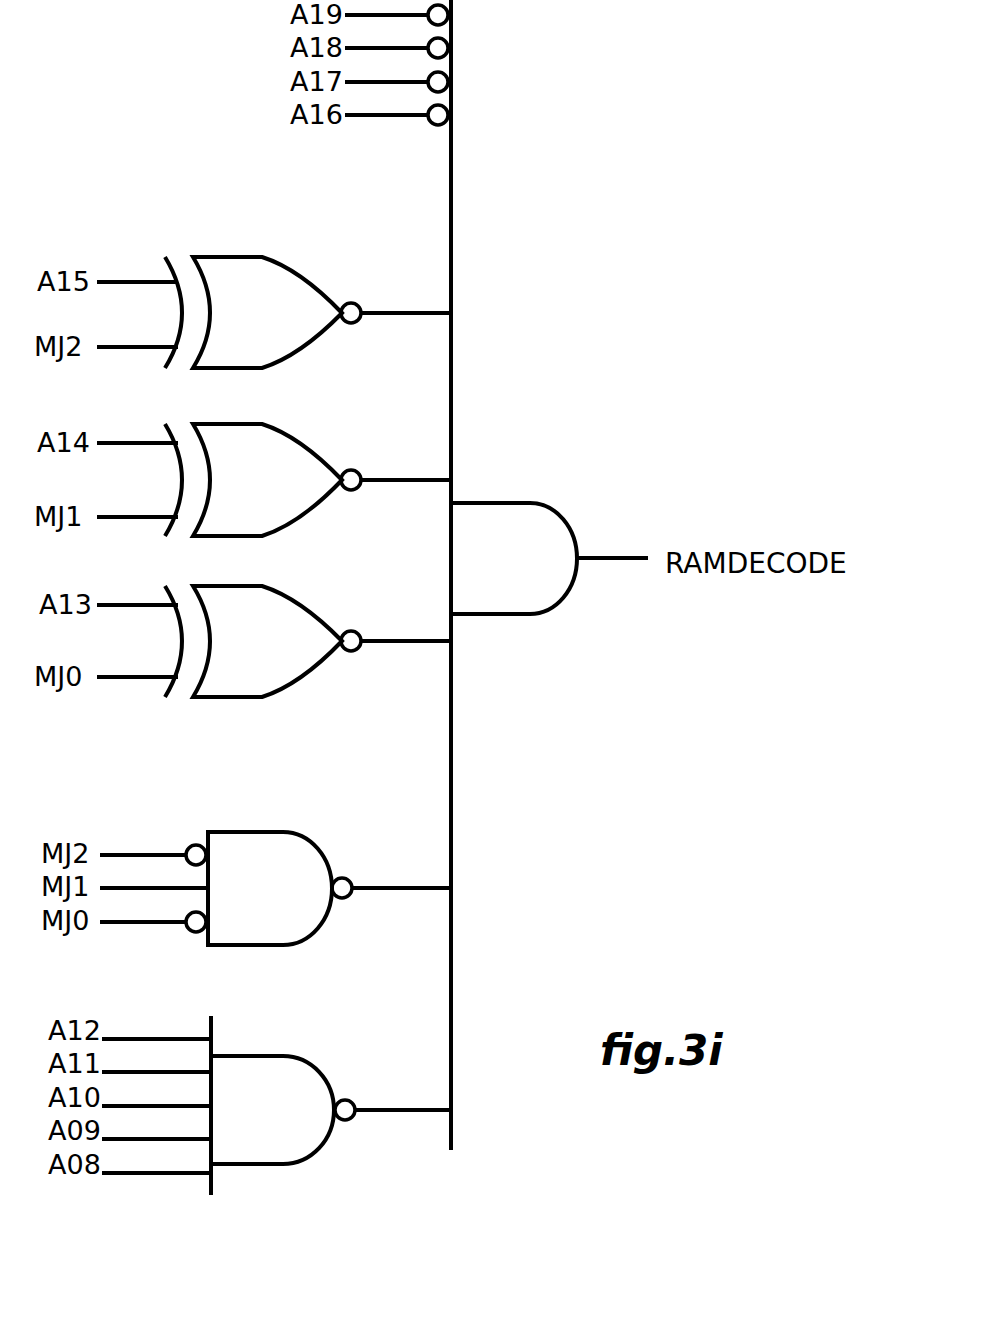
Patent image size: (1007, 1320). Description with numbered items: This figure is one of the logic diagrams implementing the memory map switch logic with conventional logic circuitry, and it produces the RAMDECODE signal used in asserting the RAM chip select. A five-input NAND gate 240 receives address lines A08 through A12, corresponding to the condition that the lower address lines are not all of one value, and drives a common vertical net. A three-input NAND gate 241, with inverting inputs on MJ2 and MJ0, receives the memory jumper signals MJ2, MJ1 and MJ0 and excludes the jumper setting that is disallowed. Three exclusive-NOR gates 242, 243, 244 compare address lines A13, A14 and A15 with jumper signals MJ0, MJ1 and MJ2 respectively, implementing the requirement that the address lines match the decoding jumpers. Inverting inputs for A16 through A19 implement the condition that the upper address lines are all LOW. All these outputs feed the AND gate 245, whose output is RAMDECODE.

The five-input NAND gate (address A08-A12 decode) 240 is at (272, 1092).
The three-input NAND gate (memory jumper MJ0-MJ2 decode) 241 is at (270, 870).
The exclusive-NOR gate comparing A13 and MJ0 242 is at (267, 633).
The exclusive-NOR gate comparing A14 and MJ1 243 is at (267, 465).
The exclusive-NOR gate comparing A15 and MJ2 244 is at (267, 295).
The AND gate producing RAMDECODE signal 245 is at (520, 545).